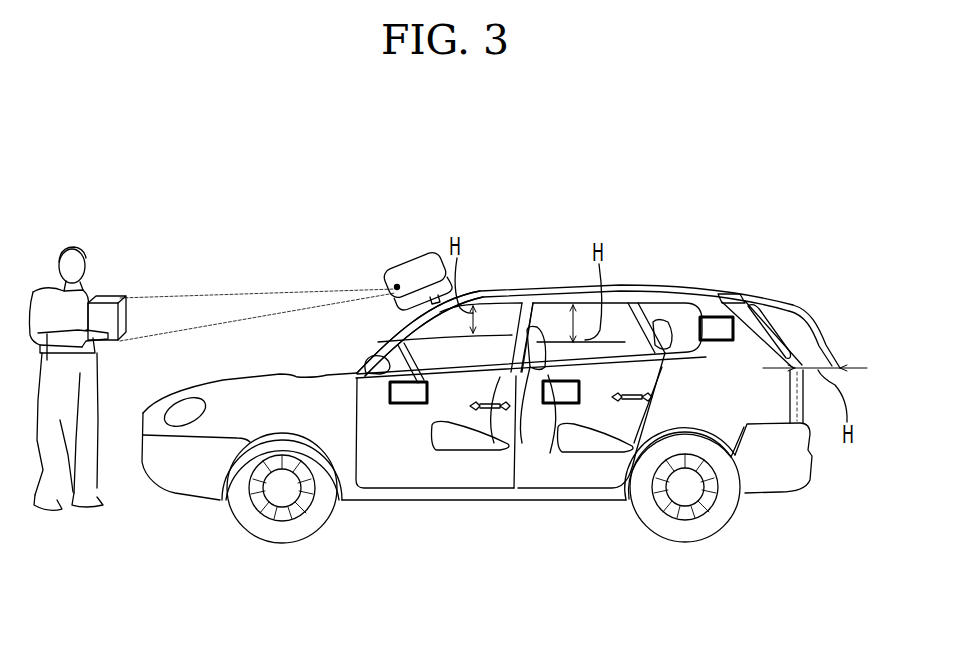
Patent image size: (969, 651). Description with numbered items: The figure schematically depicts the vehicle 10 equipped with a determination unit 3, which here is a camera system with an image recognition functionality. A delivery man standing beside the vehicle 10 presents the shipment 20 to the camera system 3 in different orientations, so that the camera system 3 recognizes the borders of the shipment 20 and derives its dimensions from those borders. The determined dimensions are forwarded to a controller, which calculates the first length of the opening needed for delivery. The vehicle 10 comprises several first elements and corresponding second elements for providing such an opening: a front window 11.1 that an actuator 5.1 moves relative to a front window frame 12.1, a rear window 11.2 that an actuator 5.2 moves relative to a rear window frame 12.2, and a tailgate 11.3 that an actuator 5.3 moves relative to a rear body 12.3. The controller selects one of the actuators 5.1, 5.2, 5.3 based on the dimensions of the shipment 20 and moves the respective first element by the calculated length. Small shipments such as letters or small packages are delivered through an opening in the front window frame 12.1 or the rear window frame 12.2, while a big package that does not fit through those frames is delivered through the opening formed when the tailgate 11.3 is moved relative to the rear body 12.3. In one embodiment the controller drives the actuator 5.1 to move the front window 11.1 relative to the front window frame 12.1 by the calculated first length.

The determination unit 3 is at (407, 262).
The vehicle 10 is at (185, 477).
The front window 11.1 is at (500, 347).
The rear window 11.2 is at (620, 347).
The tailgate 11.3 is at (820, 337).
The front window frame 12.1 is at (378, 333).
The rear window frame 12.2 is at (567, 303).
The rear body 12.3 is at (757, 333).
The actuator 5.1 is at (407, 404).
The actuator 5.2 is at (553, 404).
The actuator 5.3 is at (707, 316).
The shipment 20 is at (105, 300).